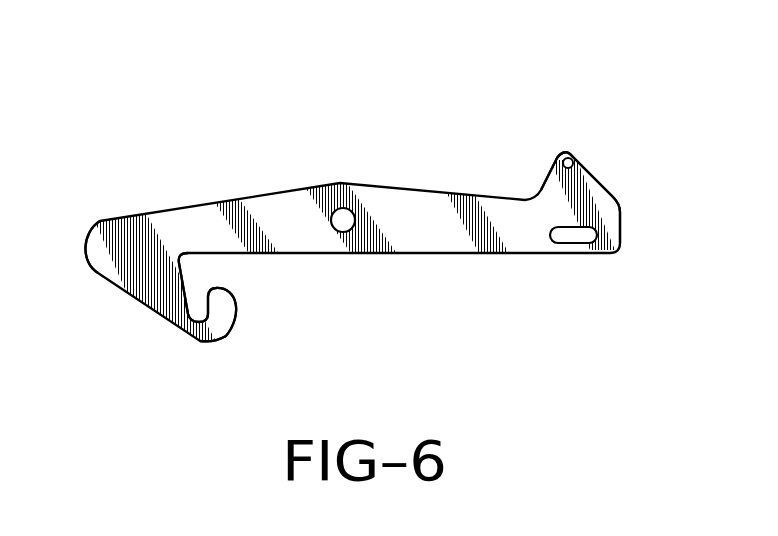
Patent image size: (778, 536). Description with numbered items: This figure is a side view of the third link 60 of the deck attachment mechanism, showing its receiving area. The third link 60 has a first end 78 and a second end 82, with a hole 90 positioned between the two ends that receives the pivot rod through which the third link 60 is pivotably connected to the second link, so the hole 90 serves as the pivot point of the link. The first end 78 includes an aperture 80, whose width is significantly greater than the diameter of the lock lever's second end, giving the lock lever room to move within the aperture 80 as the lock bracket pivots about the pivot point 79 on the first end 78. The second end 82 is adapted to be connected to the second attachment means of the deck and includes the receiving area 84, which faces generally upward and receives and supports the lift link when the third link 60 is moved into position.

The third link 60 is at (150, 133).
The first end 78 is at (598, 187).
The pivot point 79 is at (569, 158).
The aperture 80 is at (583, 238).
The second end 82 is at (102, 273).
The receiving area 84 is at (197, 288).
The hole 90 is at (343, 218).